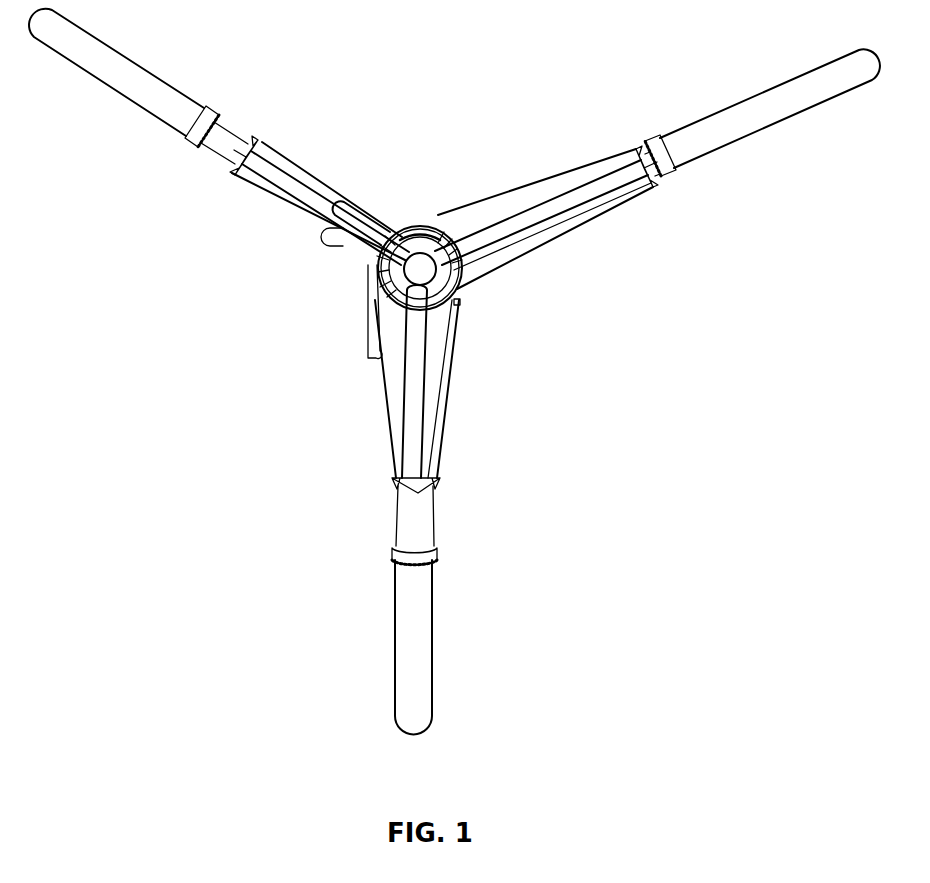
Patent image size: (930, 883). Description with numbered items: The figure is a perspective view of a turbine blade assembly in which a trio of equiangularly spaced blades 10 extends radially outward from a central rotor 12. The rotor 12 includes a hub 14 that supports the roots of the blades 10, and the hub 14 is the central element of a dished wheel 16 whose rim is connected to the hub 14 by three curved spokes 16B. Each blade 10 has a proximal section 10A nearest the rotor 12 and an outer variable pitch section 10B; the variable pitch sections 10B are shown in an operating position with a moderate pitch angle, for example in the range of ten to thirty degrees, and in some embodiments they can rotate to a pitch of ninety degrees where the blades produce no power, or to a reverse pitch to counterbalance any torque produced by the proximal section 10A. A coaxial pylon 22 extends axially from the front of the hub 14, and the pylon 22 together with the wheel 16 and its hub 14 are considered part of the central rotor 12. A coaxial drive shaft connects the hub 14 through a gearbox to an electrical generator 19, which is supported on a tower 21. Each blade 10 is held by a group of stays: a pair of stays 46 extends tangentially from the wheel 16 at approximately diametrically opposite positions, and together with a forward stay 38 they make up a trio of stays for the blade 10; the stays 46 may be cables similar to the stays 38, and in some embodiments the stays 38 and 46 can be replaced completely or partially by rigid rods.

The blade 10 is at (455, 372).
The proximal section 10A is at (268, 164).
The variable pitch section 10B is at (112, 73).
The central rotor 12 is at (432, 311).
The hub 14 is at (392, 302).
The dished wheel 16 is at (452, 237).
The curved spokes 16B is at (433, 223).
The electrical generator 19 is at (367, 208).
The tower 21 is at (367, 350).
The coaxial pylon 22 is at (461, 300).
The stay 38 is at (436, 314).
The stay 46 is at (302, 160).